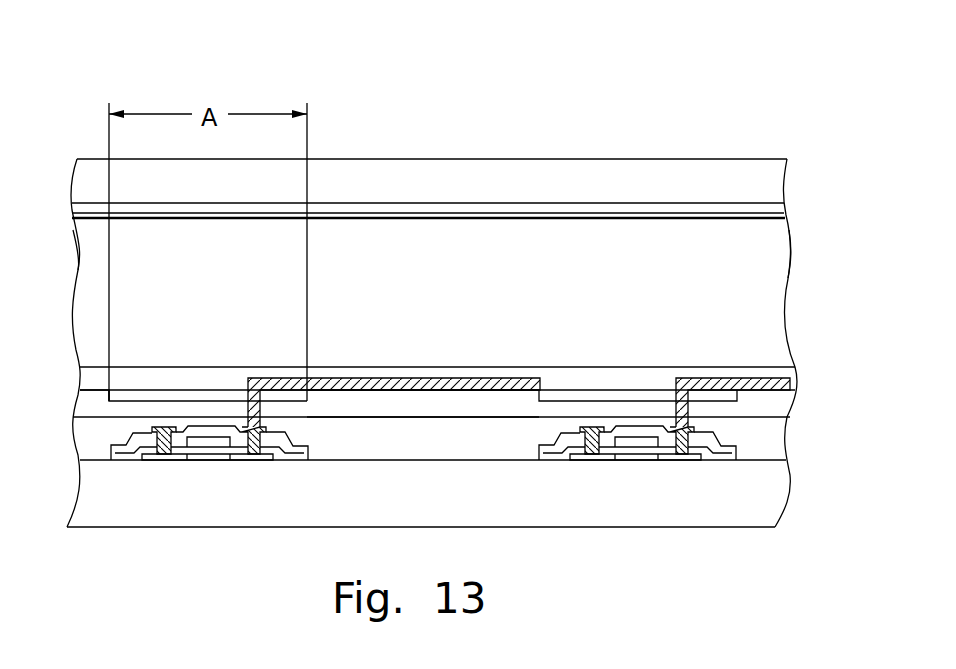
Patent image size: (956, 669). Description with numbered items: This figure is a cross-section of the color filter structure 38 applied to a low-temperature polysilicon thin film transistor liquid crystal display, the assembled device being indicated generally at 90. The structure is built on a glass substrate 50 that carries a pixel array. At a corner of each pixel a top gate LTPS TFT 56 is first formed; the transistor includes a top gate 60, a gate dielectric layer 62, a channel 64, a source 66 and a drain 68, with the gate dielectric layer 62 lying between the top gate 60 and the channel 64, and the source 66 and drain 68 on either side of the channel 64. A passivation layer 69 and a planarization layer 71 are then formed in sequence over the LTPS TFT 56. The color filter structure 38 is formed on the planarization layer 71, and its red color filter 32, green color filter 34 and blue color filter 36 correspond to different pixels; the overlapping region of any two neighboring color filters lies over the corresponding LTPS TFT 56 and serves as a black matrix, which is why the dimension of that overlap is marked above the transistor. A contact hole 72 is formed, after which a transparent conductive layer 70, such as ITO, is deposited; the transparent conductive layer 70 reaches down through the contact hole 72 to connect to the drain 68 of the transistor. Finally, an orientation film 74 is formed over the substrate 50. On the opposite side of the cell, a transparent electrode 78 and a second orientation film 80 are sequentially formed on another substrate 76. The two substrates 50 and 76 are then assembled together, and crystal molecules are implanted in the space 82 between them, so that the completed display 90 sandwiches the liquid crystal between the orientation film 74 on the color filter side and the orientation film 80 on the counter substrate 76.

The liquid crystal display 90 is at (745, 71).
The substrate 76 is at (683, 178).
The transparent electrode 78 is at (771, 206).
The orientation film 80 is at (771, 217).
The liquid crystal layer 82 is at (771, 279).
The orientation film 74 is at (798, 367).
The transparent conductive layer 70 is at (780, 376).
The contact hole 72 is at (232, 365).
The blue color filter 36 is at (762, 403).
The green color filter 34 is at (423, 402).
The planarization layer 71 is at (450, 454).
The color filter structure 38 is at (814, 418).
The red color filter 32 is at (83, 403).
The glass substrate 50 is at (770, 493).
The top gate LTPS TFT 56 is at (196, 473).
The top gate 60 is at (210, 440).
The gate dielectric layer 62 is at (180, 448).
The channel 64 is at (220, 456).
The source 66 is at (153, 456).
The drain 68 is at (257, 453).
The passivation layer 69 is at (300, 448).